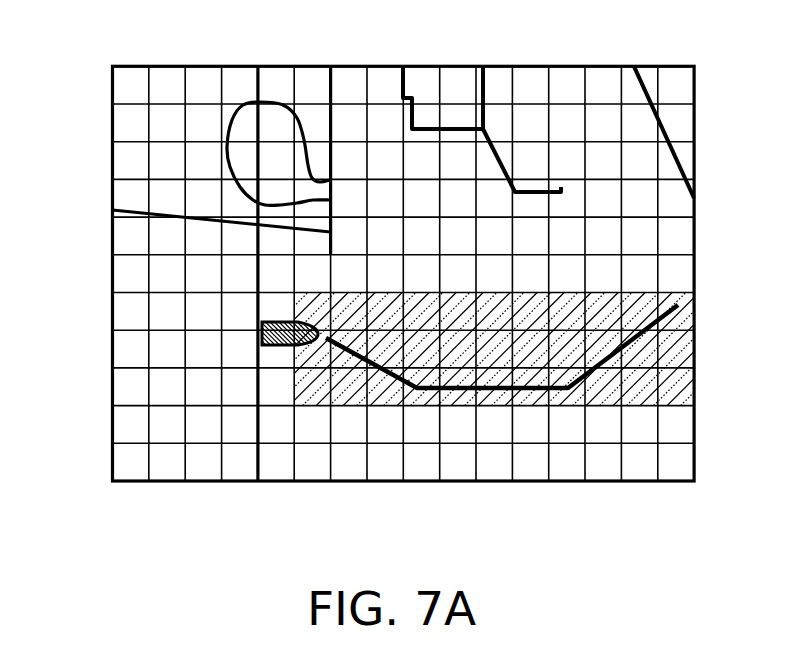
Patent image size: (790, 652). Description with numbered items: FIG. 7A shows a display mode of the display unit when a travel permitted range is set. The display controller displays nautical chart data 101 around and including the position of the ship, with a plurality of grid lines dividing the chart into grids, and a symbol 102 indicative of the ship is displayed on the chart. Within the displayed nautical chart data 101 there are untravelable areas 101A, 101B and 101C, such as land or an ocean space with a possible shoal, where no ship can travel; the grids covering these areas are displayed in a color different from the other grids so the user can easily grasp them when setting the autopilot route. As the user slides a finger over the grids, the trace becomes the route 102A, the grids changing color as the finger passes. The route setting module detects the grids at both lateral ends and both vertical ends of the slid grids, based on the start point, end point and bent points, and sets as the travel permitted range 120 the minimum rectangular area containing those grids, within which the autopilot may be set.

The nautical chart data 101 is at (127, 282).
The untravelable area 101A is at (158, 77).
The untravelable area 101B is at (420, 77).
The untravelable area 101C is at (650, 72).
The symbol indicative of the ship 102 is at (297, 343).
The route 102A is at (443, 397).
The travel permitted range 120 is at (638, 397).